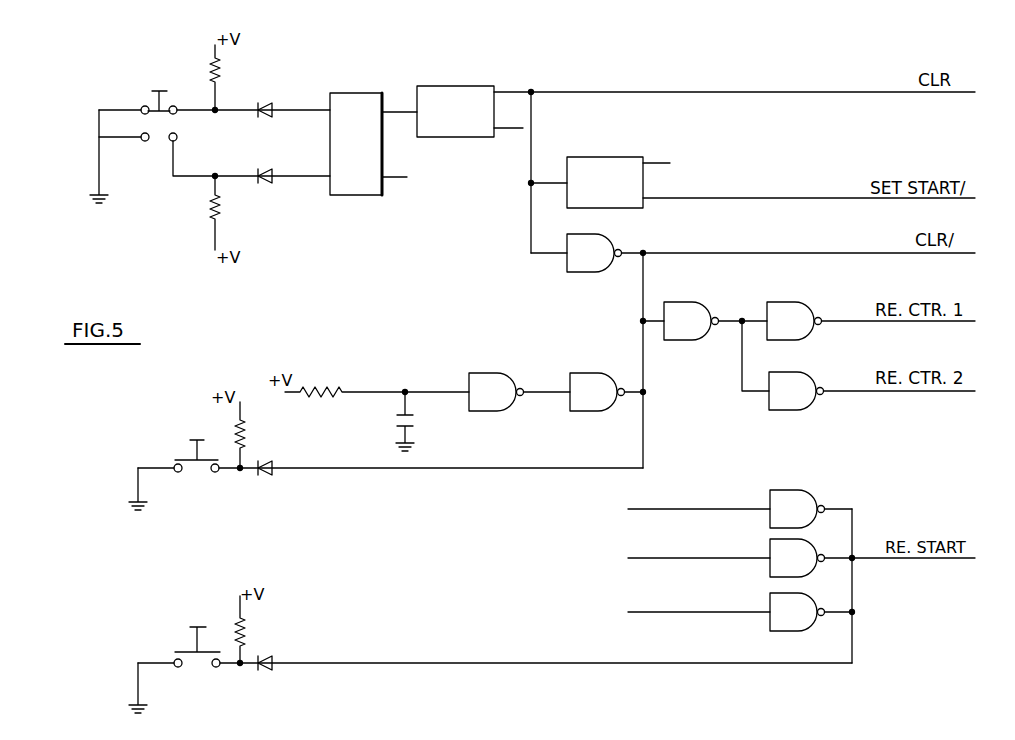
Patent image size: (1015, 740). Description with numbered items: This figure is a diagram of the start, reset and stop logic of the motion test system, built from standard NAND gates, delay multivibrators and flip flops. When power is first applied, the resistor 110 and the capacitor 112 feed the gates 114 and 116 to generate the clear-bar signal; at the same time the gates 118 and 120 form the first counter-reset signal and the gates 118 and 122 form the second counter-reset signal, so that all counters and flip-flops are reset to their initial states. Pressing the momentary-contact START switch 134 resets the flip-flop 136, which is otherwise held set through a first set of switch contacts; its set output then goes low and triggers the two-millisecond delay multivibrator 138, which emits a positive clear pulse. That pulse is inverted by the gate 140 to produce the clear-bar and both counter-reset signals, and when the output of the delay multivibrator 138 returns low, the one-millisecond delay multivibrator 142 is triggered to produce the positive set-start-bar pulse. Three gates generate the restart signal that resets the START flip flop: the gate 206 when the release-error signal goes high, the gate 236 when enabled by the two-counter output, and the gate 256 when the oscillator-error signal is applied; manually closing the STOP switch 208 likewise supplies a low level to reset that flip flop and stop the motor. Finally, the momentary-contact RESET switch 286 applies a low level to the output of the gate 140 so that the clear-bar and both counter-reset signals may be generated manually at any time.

The resistor 110 is at (333, 378).
The capacitor 112 is at (420, 426).
The gate 114 is at (488, 373).
The gate 116 is at (588, 373).
The gate 118 is at (700, 302).
The gate 120 is at (795, 302).
The gate 122 is at (810, 372).
The START switch 134 is at (157, 145).
The flip-flop 136 is at (382, 193).
The delay multivibrator 138 is at (462, 137).
The gate 140 is at (567, 262).
The delay multivibrator 142 is at (643, 208).
The gate 206 is at (812, 625).
The STOP switch 208 is at (201, 672).
The gate 236 is at (805, 490).
The gate 256 is at (812, 571).
The RESET switch 286 is at (200, 478).